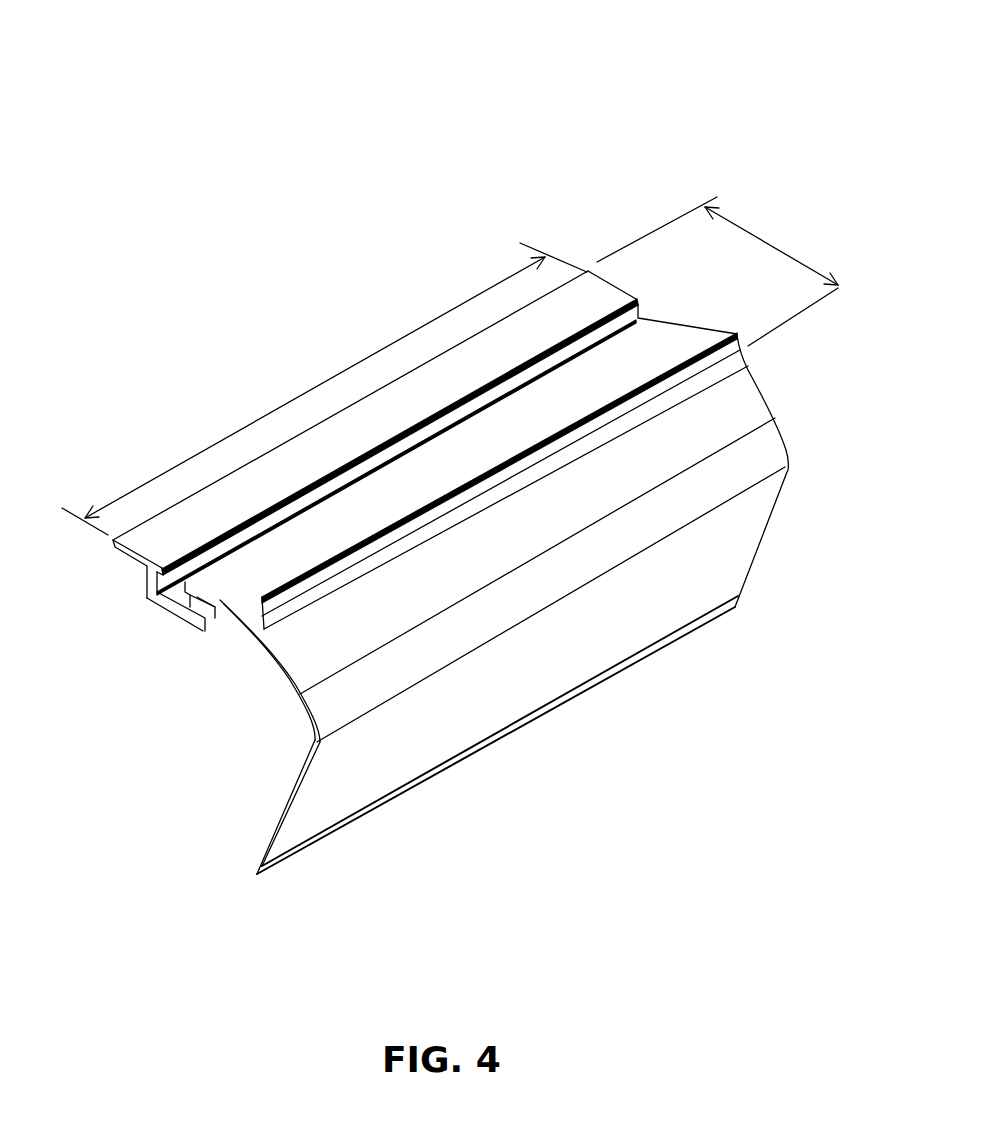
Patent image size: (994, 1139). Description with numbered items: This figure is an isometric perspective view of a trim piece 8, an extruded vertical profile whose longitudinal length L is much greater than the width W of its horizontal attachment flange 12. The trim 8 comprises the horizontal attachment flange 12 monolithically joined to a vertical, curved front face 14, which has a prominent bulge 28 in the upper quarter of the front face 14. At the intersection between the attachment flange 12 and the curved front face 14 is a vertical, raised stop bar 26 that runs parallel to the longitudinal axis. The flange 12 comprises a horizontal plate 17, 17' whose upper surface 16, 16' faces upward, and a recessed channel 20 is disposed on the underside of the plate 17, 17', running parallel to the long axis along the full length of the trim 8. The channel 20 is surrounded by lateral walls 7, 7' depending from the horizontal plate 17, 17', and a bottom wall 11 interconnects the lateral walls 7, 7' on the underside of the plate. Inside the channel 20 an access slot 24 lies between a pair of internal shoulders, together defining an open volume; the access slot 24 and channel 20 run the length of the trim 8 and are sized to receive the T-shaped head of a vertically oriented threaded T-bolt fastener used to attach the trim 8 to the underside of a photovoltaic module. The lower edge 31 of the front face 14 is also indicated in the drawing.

The trim piece 8 is at (124, 80).
The horizontal attachment flange 12 is at (742, 352).
The curved vertical front face 14 is at (547, 677).
The upper surface 16 is at (375, 419).
The upper surface 16' is at (461, 461).
The horizontal plate 17 is at (83, 580).
The horizontal plate 17' is at (270, 672).
The lateral wall 7 is at (98, 605).
The lateral wall 7' is at (196, 663).
The recessed channel 20 is at (160, 607).
The bottom wall 11 is at (172, 605).
The access slot 24 is at (452, 405).
The vertical stop bar 26 is at (741, 352).
The bulge 28 is at (705, 502).
The lower edge 31 is at (600, 683).